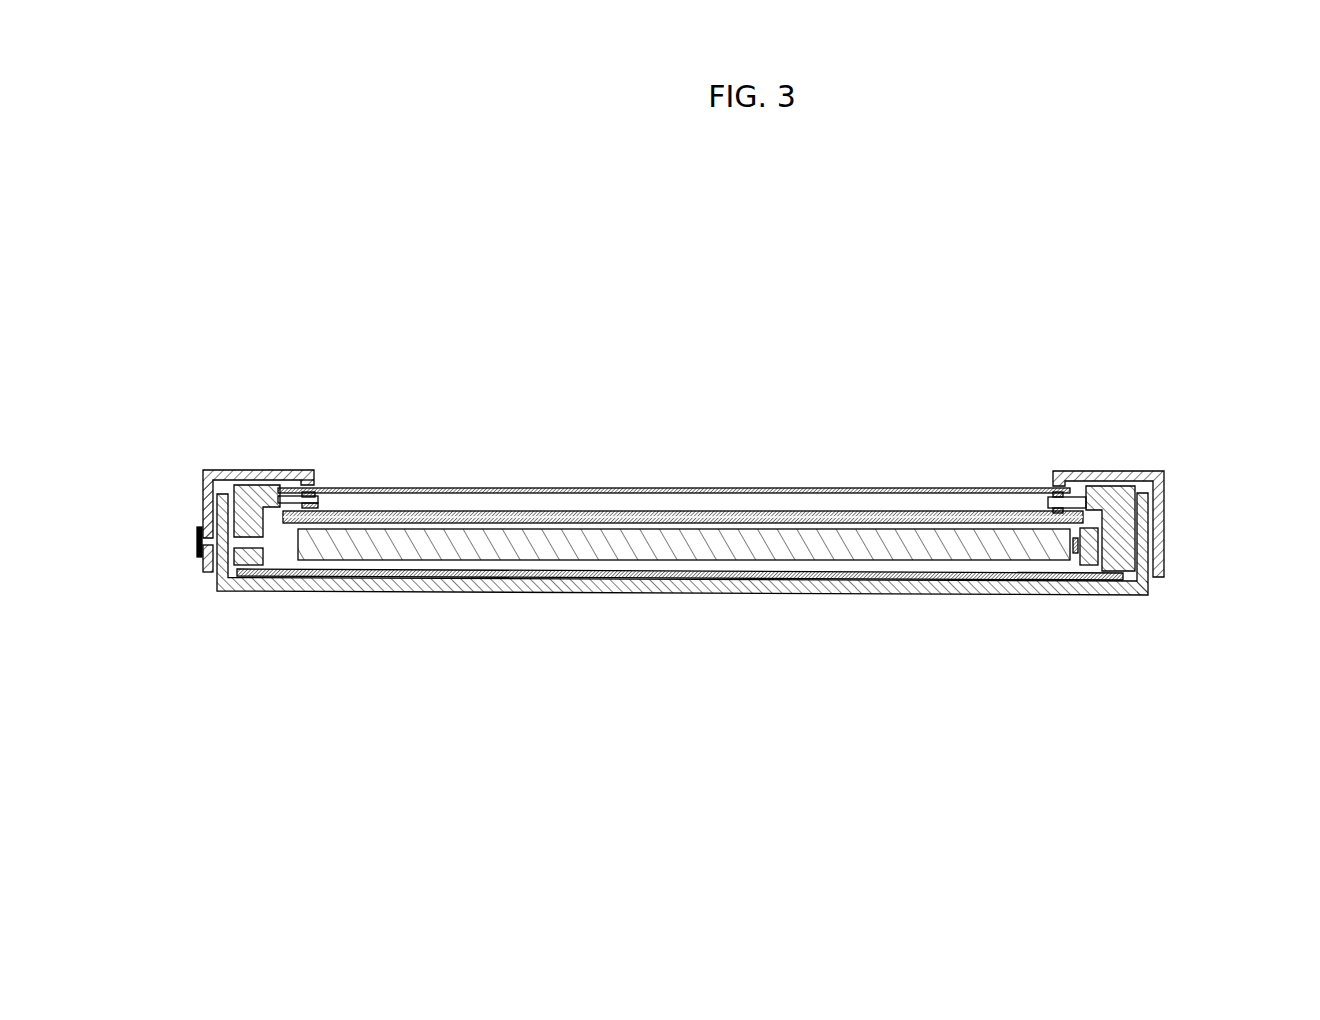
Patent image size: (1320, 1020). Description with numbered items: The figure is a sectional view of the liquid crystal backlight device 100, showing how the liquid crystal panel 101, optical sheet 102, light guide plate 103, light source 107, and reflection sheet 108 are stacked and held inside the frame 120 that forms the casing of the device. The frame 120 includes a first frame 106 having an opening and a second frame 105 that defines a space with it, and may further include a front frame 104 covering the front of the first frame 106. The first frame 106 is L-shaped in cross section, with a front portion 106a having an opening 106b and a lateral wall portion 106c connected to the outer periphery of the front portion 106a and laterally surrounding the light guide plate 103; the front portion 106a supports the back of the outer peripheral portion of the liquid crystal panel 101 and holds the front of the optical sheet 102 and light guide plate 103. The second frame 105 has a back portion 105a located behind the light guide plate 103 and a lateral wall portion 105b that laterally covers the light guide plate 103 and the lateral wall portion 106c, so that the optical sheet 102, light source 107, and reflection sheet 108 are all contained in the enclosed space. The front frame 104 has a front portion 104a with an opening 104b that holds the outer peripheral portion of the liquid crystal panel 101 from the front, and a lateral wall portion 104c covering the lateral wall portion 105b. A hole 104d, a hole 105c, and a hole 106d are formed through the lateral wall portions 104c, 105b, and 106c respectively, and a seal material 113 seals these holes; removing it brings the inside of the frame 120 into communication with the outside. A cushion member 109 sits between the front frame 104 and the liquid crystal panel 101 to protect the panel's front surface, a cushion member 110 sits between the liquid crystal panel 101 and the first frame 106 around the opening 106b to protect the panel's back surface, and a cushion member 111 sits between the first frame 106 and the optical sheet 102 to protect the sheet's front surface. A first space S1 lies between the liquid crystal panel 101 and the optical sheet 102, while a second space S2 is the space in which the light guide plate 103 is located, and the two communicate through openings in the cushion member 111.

The liquid crystal backlight device 100 is at (1112, 318).
The liquid crystal panel 101 is at (989, 486).
The optical sheet 102 is at (737, 515).
The light guide plate 103 is at (842, 535).
The front frame 104 is at (1164, 476).
The front portion 104a is at (1131, 473).
The opening 104b is at (1056, 483).
The lateral wall portion 104c is at (207, 492).
The hole 104d is at (201, 541).
The second frame 105 is at (1150, 587).
The back portion 105a is at (791, 592).
The lateral wall portion 105b is at (222, 497).
The hole 105c is at (222, 542).
The first frame 106 is at (1125, 521).
The front portion 106a is at (1072, 498).
The opening 106b is at (1053, 500).
The lateral wall portion 106c is at (1117, 560).
The hole 106d is at (257, 543).
The light source 107 is at (1077, 562).
The reflection sheet 108 is at (992, 577).
The cushion member 109 is at (307, 483).
The cushion member 110 is at (310, 496).
The cushion member 111 is at (312, 505).
The seal material 113 is at (198, 543).
The frame 120 is at (1233, 452).
The first space S1 is at (644, 490).
The second space S2 is at (589, 566).